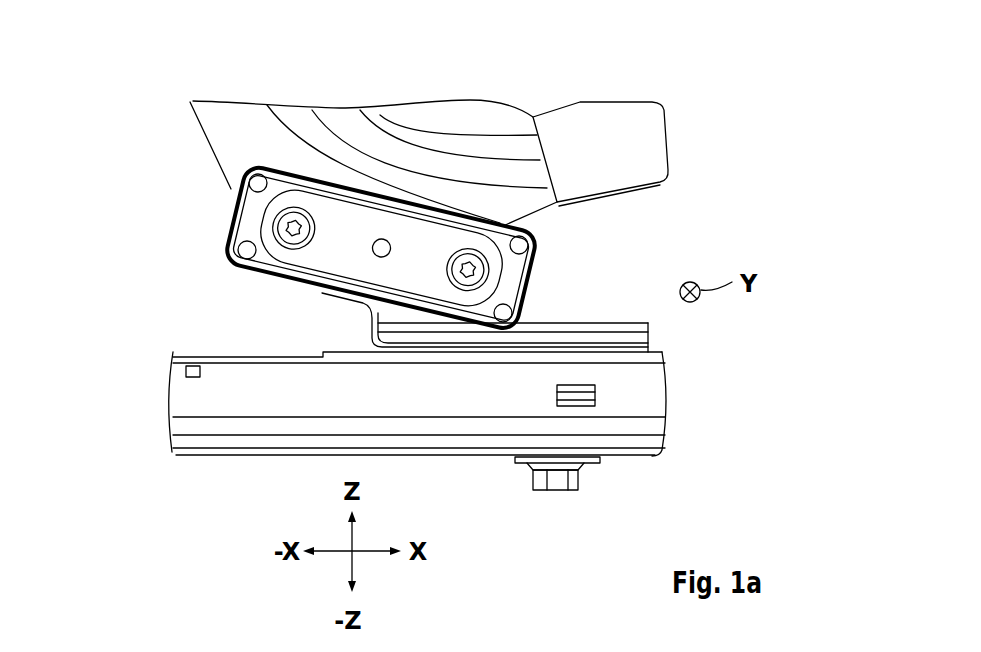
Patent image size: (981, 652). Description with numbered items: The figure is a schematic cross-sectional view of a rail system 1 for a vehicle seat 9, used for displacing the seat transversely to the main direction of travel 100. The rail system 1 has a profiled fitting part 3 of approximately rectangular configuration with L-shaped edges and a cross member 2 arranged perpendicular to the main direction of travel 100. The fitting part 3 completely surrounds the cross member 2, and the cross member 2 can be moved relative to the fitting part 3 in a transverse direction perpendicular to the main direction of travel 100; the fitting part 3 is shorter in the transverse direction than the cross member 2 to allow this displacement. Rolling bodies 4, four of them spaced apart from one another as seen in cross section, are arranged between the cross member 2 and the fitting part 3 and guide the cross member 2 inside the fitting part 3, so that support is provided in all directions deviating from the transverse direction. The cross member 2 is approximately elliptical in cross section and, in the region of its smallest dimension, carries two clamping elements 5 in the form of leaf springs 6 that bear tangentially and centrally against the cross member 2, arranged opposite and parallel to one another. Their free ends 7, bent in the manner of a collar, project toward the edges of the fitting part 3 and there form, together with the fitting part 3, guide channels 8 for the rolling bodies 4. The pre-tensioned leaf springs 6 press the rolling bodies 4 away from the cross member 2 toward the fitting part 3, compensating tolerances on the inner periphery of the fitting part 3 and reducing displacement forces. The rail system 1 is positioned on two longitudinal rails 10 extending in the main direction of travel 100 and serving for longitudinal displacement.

The rail system 1 is at (250, 75).
The vehicle seat 9 is at (523, 75).
The main direction of travel 100 is at (627, 52).
The cross member 2 is at (335, 243).
The fitting part 3 is at (232, 232).
The rolling bodies 4 is at (509, 312).
The clamping elements 5 is at (247, 263).
The leaf springs 6 is at (507, 238).
The free ends 7 is at (245, 222).
The guide channels 8 is at (245, 187).
The longitudinal rails 10 is at (181, 395).